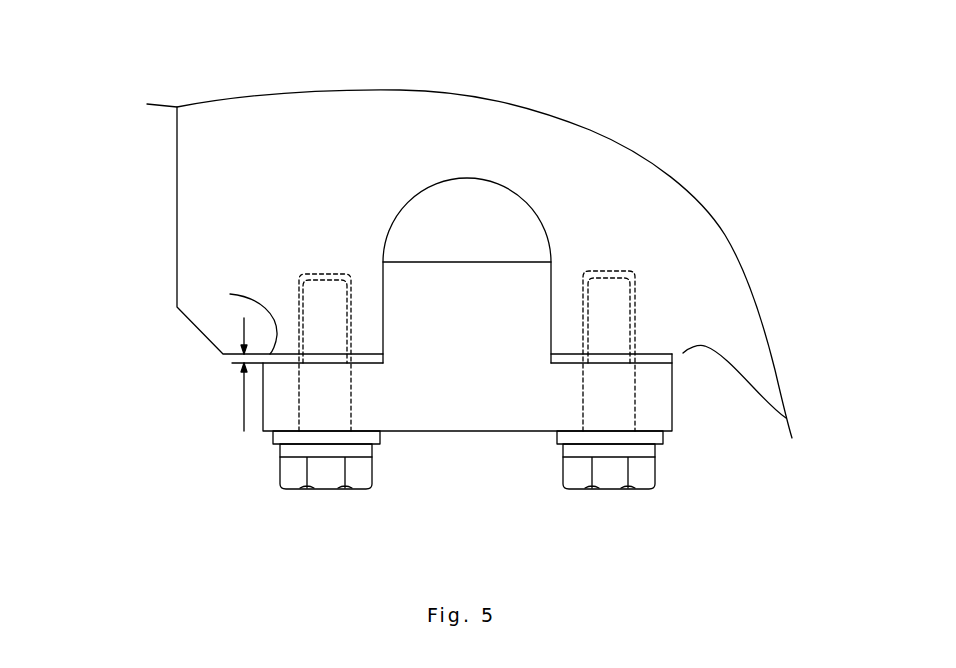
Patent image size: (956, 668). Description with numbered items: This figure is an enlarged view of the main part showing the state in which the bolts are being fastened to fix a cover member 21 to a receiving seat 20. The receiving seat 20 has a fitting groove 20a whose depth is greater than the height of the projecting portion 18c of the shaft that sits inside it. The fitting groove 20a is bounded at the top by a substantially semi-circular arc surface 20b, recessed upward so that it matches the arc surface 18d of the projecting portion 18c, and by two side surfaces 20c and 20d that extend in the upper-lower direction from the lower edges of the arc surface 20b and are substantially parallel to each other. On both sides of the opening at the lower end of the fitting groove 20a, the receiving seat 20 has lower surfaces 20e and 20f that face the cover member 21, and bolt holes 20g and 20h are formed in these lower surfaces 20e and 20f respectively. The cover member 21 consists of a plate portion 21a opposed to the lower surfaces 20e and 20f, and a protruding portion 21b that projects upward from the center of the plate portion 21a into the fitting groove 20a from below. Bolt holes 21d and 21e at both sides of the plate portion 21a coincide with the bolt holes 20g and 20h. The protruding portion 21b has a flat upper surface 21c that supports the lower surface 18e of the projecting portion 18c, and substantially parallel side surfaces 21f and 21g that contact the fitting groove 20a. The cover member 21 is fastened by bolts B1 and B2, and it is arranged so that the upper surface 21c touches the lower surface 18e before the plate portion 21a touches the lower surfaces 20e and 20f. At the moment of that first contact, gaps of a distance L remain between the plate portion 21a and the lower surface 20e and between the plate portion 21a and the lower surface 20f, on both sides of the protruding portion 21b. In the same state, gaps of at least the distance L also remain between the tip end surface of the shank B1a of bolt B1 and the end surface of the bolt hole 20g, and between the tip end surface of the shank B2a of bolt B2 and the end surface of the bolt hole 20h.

The receiving seat 20 is at (177, 158).
The fitting groove 20a is at (537, 213).
The arc surface 20b is at (438, 182).
The side surface 20c is at (552, 287).
The side surface 20d is at (383, 293).
The lower surface 20e is at (657, 353).
The lower surface 20f is at (230, 294).
The bolt hole 20g is at (612, 271).
The bolt hole 20h is at (325, 272).
The projecting portion 18c is at (468, 212).
The arc surface 18d is at (507, 188).
The lower surface 18e is at (413, 262).
The cover member 21 is at (672, 420).
The plate portion 21a is at (547, 413).
The protruding portion 21b is at (552, 323).
The upper surface 21c is at (467, 263).
The bolt hole 21d is at (633, 380).
The bolt hole 21e is at (300, 398).
The side surface 21f is at (507, 298).
The side surface 21g is at (383, 327).
The bolt B1 is at (632, 489).
The shank B1a is at (620, 300).
The bolt B2 is at (312, 489).
The shank B2a is at (320, 293).
The distance L is at (233, 376).